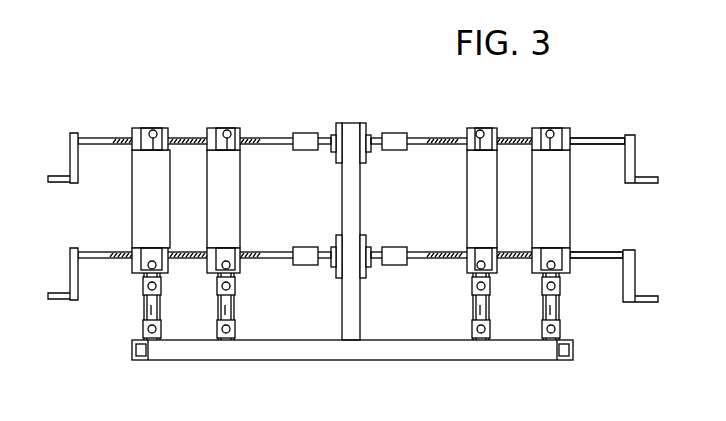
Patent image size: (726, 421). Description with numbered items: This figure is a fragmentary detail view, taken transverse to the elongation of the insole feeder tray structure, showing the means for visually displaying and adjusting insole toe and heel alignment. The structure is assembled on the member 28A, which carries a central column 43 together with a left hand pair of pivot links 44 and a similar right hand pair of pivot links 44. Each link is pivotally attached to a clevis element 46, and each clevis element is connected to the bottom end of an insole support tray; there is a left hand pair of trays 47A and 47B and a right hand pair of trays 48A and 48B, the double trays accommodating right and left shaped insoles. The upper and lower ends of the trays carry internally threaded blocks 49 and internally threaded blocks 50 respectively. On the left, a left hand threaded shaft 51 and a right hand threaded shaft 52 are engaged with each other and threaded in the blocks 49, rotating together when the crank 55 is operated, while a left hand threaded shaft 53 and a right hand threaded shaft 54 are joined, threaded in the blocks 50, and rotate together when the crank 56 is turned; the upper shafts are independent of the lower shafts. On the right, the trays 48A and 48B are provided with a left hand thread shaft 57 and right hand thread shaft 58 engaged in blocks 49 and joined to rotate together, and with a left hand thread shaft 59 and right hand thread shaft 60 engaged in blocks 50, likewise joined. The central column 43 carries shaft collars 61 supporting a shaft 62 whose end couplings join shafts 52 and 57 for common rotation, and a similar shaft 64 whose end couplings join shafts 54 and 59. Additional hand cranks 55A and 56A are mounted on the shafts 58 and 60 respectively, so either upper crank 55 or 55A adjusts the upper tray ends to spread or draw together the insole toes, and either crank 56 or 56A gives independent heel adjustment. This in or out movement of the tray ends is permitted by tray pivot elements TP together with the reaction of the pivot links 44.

The member 28A is at (386, 360).
The central column 43 is at (350, 196).
The pivot links 44 is at (218, 306).
The clevis element 46 is at (143, 290).
The insole support tray 47A is at (241, 197).
The insole support tray 47B is at (132, 197).
The insole support tray 48A is at (468, 200).
The insole support tray 48B is at (557, 198).
The internally threaded blocks 49 is at (222, 128).
The internally threaded blocks 50 is at (228, 258).
The left hand threaded shaft 51 is at (99, 137).
The right hand threaded shaft 52 is at (263, 138).
The left hand threaded shaft 53 is at (118, 252).
The right hand threaded shaft 54 is at (253, 252).
The crank 55 is at (68, 168).
The hand crank 55A is at (637, 163).
The crank 56 is at (69, 282).
The hand crank 56A is at (637, 280).
The left hand thread shaft 57 is at (430, 137).
The right hand thread shaft 58 is at (595, 141).
The left hand thread shaft 59 is at (437, 272).
The right hand thread shaft 60 is at (613, 253).
The shaft collars 61 is at (367, 124).
The shaft 62 is at (377, 136).
The shaft 64 is at (333, 250).
The tray pivot elements TP is at (226, 139).